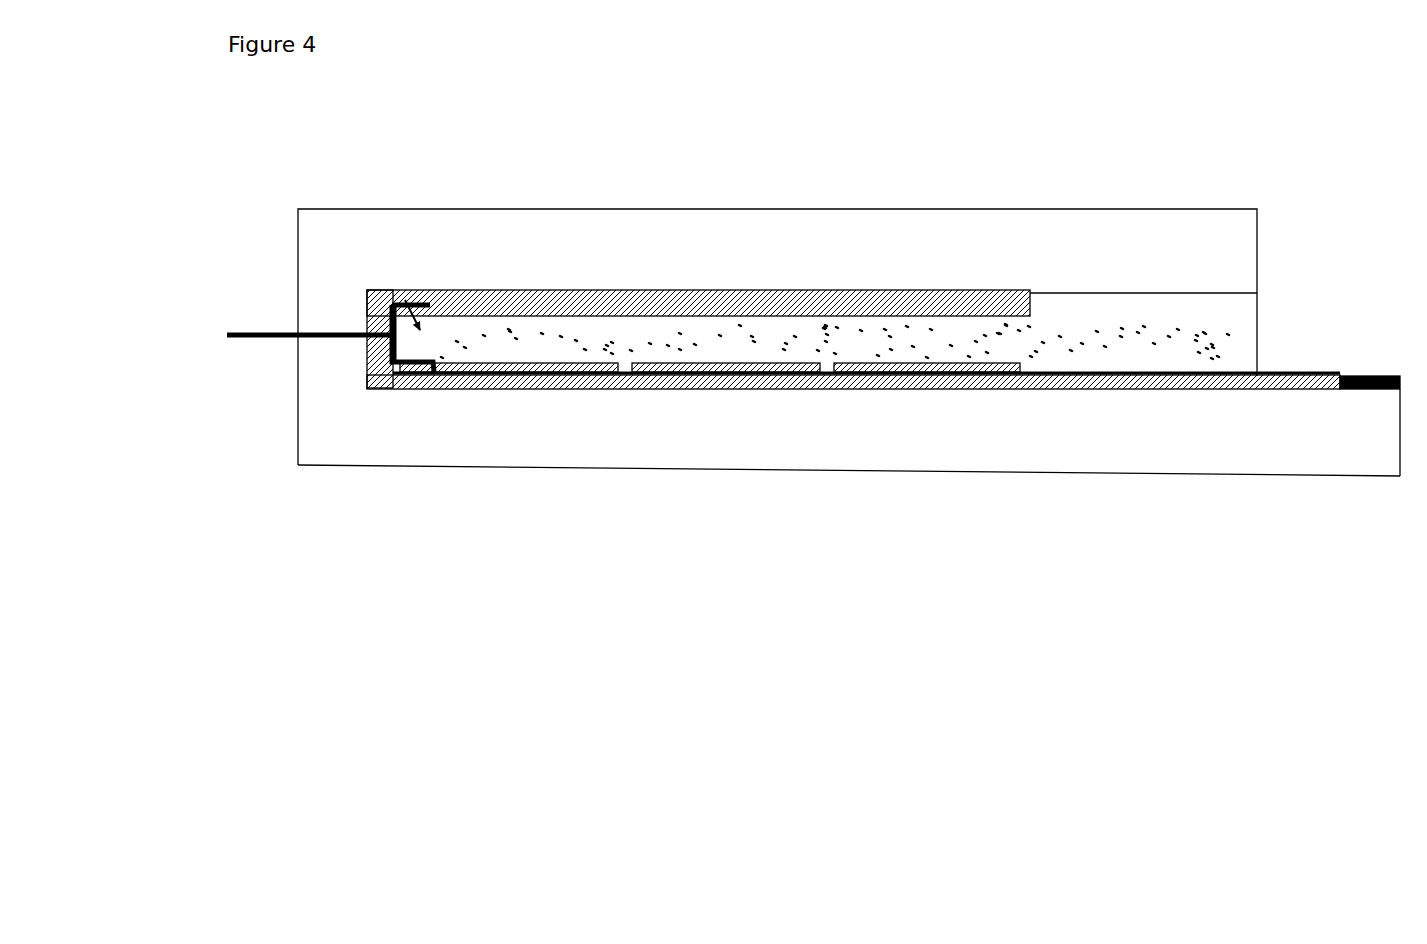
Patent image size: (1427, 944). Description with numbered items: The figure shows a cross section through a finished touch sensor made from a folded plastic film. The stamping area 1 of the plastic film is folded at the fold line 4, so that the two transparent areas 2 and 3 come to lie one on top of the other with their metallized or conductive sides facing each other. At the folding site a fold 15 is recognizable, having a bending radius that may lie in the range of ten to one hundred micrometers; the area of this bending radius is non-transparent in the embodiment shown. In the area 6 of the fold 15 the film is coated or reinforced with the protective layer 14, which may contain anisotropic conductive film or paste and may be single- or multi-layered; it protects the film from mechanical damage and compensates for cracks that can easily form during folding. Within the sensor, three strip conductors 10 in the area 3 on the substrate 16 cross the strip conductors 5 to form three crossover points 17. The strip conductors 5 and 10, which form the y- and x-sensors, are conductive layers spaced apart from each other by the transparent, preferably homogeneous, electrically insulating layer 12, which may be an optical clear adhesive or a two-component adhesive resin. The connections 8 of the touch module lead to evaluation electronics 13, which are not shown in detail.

The stamping area 1 is at (908, 237).
The transparent area 2 is at (668, 290).
The transparent area 3 is at (710, 380).
The fold line 4 is at (227, 332).
The strip conductors 5 is at (1022, 308).
The area 6 is at (376, 393).
The connections 8 is at (1362, 378).
The strip conductors 10 is at (725, 363).
The electrically insulating layer 12 is at (1195, 335).
The evaluation electronics 13 is at (1402, 392).
The protective layer 14 is at (405, 300).
The fold 15 is at (405, 300).
The substrate 16 is at (840, 437).
The crossover points 17 is at (718, 340).